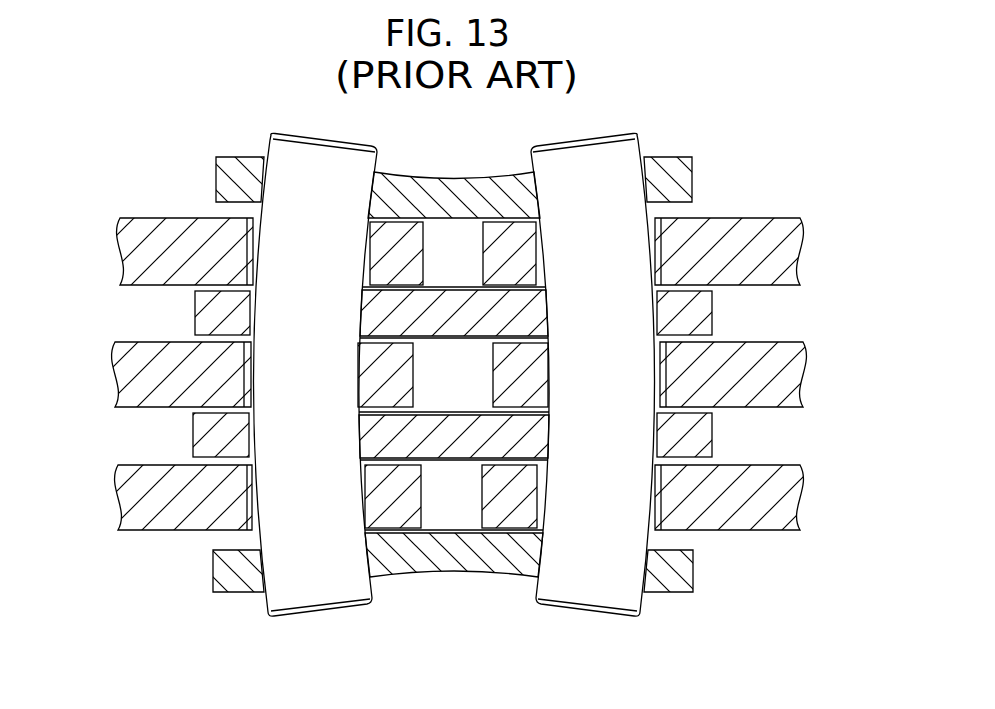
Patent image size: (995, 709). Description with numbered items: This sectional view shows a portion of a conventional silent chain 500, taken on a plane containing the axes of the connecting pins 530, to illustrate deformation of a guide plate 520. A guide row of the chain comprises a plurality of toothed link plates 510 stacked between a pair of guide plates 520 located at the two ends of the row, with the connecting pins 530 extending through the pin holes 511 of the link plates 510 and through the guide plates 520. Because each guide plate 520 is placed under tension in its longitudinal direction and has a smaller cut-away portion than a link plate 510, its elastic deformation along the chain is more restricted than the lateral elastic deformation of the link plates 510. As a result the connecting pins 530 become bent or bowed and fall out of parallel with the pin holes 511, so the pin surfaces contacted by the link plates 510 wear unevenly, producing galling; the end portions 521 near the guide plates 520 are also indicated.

The silent chain 500 is at (823, 95).
The toothed link plates 510 is at (153, 256).
The pin holes 511 is at (256, 246).
The guide plate 520 is at (238, 188).
The end portions 521 is at (268, 175).
The connecting pins 530 is at (338, 160).